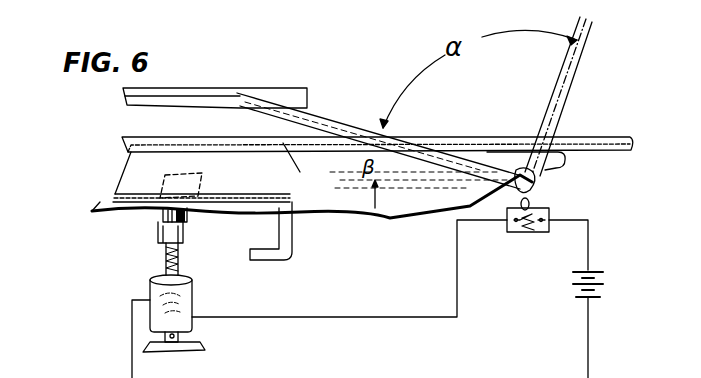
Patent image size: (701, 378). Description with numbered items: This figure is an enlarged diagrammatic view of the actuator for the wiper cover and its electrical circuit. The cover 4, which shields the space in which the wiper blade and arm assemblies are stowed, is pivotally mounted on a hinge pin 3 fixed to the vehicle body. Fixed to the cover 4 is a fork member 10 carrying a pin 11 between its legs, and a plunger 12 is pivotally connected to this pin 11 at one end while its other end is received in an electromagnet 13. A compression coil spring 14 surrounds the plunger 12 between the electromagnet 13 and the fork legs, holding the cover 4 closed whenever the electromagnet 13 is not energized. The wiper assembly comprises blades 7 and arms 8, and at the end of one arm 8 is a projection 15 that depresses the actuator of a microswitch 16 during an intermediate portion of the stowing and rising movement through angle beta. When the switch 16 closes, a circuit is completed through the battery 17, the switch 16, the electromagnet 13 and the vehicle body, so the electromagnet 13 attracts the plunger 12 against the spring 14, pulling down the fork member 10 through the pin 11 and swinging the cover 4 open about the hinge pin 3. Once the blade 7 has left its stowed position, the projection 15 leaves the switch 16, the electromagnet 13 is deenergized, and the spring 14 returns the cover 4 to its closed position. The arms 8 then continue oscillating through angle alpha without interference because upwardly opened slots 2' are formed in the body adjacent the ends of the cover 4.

The upwardly opened grooves or slots 2' is at (540, 96).
The hinge pin 3 is at (293, 213).
The cover 4 is at (132, 176).
The wiper blades 7 is at (258, 92).
The wiper arms 8 is at (340, 127).
The fork member 10 is at (160, 218).
The pin 11 is at (184, 218).
The plunger 12 is at (160, 241).
The electromagnet 13 is at (192, 322).
The compression coil spring 14 is at (179, 254).
The projection 15 is at (536, 198).
The microswitch 16 is at (517, 233).
The battery 17 is at (604, 282).